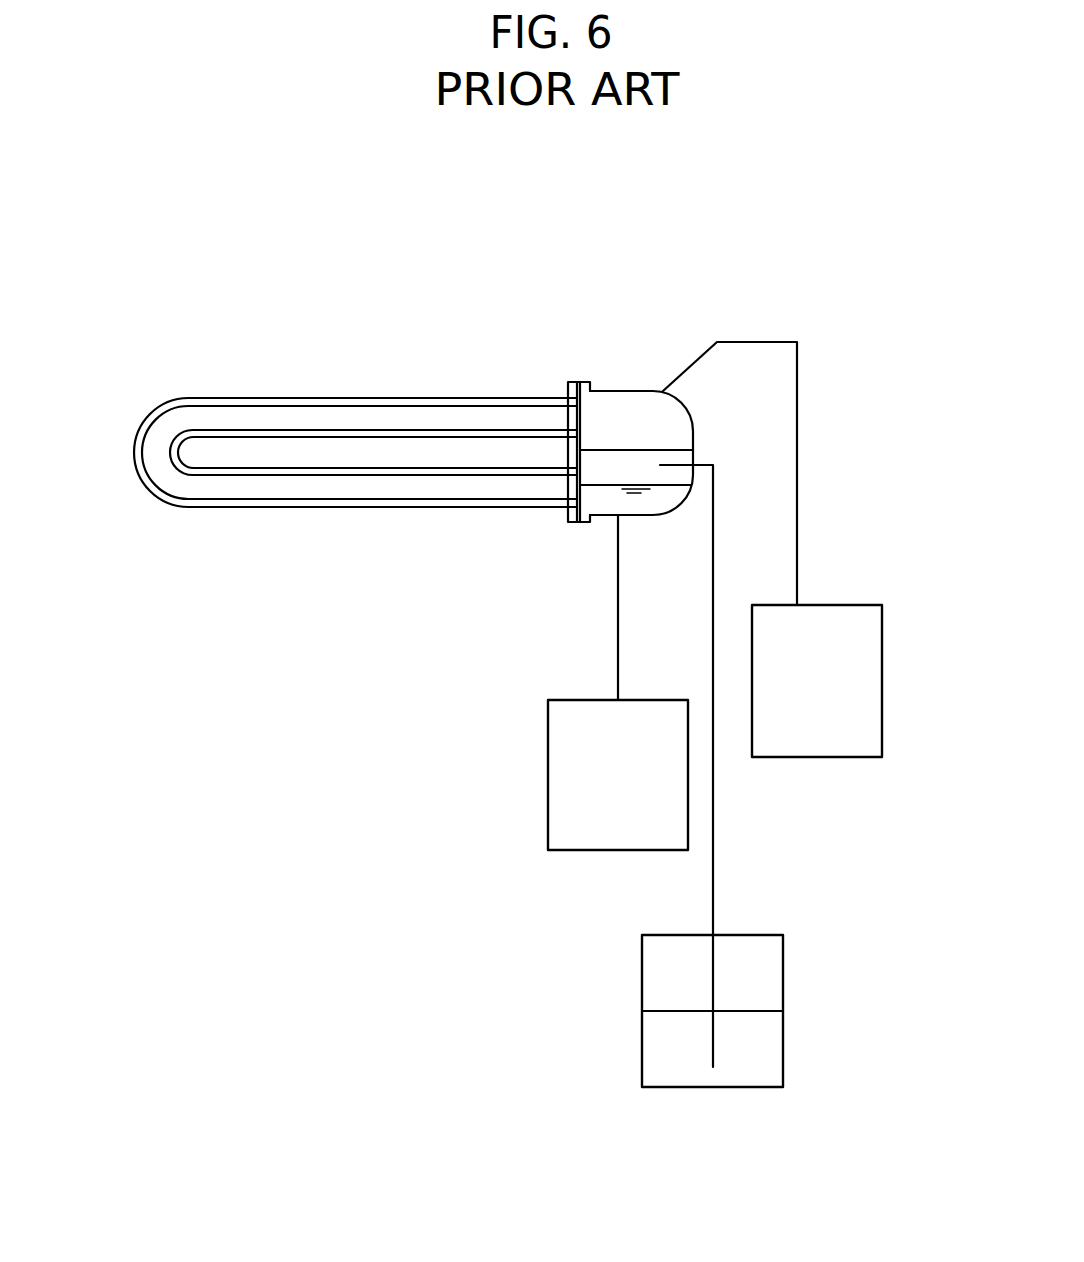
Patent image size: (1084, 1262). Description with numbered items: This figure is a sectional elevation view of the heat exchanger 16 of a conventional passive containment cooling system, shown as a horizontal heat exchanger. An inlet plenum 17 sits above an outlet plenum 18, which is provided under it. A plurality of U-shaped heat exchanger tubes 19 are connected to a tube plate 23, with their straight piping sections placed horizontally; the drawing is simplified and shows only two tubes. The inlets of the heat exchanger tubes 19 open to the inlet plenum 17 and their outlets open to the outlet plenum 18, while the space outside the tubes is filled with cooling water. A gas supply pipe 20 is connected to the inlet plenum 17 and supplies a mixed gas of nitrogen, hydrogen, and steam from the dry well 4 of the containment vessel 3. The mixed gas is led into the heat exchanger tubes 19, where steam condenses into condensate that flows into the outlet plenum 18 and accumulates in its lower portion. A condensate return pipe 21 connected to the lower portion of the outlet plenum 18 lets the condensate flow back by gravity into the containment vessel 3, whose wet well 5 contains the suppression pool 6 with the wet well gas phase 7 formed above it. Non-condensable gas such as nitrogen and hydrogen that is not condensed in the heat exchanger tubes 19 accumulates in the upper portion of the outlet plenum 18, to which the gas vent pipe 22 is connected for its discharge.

The heat exchanger 16 is at (647, 228).
The inlet plenum 17 is at (628, 400).
The outlet plenum 18 is at (623, 460).
The heat exchanger tubes 19 is at (337, 430).
The gas supply pipe 20 is at (747, 342).
The condensate return pipe 21 is at (618, 630).
The gas vent pipe 22 is at (713, 903).
The tube plate 23 is at (574, 383).
The containment vessel 3 is at (545, 767).
The dry well 4 is at (853, 758).
The wet well 5 is at (642, 968).
The suppression pool 6 is at (765, 1050).
The wet well gas phase 7 is at (765, 982).